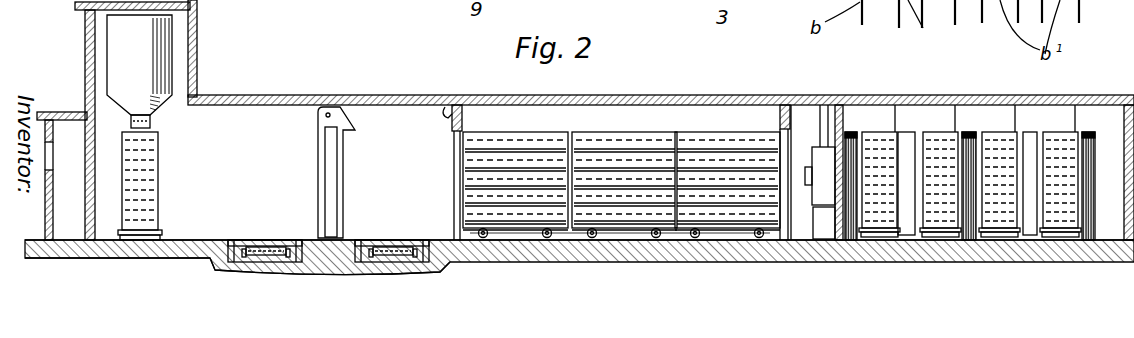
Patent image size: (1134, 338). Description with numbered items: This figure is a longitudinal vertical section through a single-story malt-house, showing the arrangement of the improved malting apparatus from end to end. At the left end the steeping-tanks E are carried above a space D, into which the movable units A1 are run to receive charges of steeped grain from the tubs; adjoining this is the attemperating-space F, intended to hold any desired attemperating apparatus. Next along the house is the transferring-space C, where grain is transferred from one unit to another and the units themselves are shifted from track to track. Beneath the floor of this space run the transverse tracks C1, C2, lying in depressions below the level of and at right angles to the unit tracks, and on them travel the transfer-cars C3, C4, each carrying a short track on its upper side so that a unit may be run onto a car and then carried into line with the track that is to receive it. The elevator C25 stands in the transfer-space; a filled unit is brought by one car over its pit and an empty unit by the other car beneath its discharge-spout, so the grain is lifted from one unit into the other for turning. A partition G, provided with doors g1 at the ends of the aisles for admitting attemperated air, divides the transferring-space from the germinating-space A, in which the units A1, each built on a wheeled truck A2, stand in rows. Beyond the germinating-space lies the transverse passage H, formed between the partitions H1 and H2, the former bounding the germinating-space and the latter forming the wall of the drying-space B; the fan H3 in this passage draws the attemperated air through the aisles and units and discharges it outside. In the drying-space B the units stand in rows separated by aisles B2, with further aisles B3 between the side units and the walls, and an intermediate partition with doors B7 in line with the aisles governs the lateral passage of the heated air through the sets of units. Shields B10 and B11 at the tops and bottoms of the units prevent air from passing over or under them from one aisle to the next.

The steeping-tank E is at (139, 71).
The unit A1 is at (160, 152).
The attemperating-space F is at (62, 176).
The space beneath the steeping-tanks D is at (141, 212).
The elevator C25 is at (318, 132).
The transfer-car C3 is at (260, 238).
The track C1 is at (248, 256).
The transfer-car C4 is at (388, 240).
The track C2 is at (380, 255).
The transferring-space C is at (397, 167).
The door g1 is at (460, 154).
The partition G is at (454, 94).
The germinating-space A is at (648, 122).
The wheeled truck A2 is at (512, 232).
The transverse partition H1 is at (778, 122).
The transverse passage H is at (818, 172).
The transverse partition H2 is at (830, 104).
The fan H3 is at (820, 193).
The drying-space B is at (978, 186).
The shield B10 is at (1088, 92).
The door B7 is at (1030, 145).
The shield B11 is at (1078, 228).
The aisle B2 is at (968, 238).
The aisle B3 is at (1100, 238).